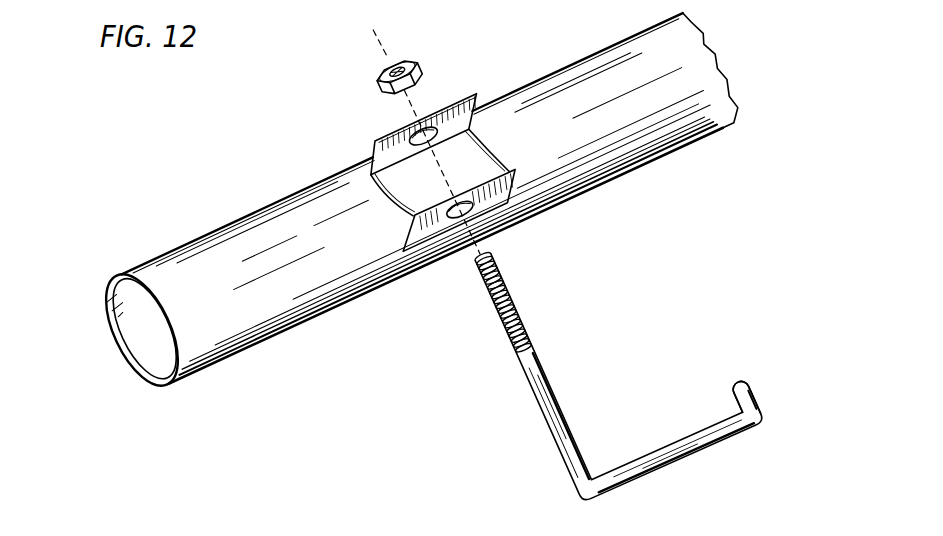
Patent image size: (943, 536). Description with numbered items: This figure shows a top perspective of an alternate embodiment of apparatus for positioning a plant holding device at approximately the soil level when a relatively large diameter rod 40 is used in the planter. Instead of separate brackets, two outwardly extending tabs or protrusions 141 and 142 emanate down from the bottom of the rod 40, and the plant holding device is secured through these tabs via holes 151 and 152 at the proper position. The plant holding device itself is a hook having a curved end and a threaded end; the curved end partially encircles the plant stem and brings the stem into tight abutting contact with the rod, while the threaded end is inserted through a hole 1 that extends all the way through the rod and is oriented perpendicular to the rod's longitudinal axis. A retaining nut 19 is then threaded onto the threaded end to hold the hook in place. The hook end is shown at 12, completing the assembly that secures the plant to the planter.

The rod 40 is at (712, 57).
The tab 141 is at (468, 92).
The tab 142 is at (509, 167).
The hole 151 is at (428, 128).
The hole 152 is at (458, 209).
The retaining nut 19 is at (403, 56).
The hole 1 is at (487, 298).
The hook tip 12 is at (750, 401).